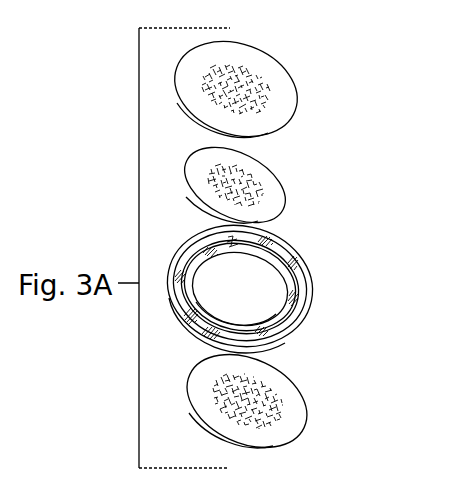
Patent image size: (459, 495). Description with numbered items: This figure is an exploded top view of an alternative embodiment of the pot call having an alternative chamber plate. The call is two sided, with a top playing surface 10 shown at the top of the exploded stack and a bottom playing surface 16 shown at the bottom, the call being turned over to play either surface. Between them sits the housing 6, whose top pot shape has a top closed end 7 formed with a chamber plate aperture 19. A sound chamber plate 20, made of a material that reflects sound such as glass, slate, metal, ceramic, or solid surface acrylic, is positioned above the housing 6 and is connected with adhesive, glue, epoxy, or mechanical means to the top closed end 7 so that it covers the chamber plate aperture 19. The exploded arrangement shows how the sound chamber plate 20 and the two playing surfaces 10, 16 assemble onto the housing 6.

The top playing surface 10 is at (263, 88).
The sound chamber plate 20 is at (255, 185).
The housing 6 is at (287, 328).
The chamber plate aperture 19 is at (252, 282).
The top closed end 7 is at (212, 248).
The bottom playing surface 16 is at (275, 412).